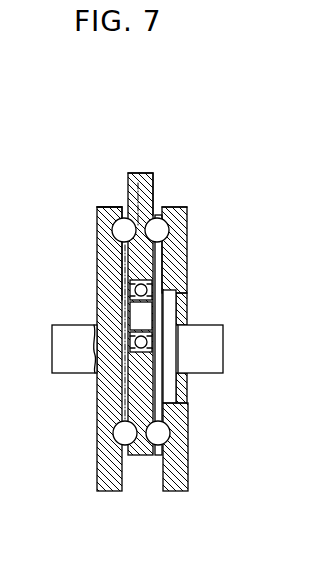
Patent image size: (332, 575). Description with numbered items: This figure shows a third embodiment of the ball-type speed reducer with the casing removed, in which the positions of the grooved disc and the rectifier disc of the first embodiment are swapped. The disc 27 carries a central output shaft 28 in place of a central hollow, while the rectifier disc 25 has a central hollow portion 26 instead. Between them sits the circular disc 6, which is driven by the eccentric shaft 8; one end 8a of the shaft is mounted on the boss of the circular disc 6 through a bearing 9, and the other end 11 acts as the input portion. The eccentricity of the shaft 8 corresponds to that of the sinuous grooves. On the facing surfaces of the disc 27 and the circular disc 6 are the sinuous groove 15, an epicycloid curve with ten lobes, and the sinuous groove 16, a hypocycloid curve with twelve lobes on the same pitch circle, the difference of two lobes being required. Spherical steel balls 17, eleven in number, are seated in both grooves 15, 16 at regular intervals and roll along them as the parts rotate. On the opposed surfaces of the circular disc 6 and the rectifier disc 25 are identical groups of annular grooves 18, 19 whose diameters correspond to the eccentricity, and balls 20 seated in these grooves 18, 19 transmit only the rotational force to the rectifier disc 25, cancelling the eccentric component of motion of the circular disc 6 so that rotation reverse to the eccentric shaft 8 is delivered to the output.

The circular disc 6 is at (140, 176).
The eccentric shaft 8 is at (196, 379).
The one end of eccentric shaft 8a is at (152, 316).
The bearing 9 is at (186, 268).
The other end of eccentric shaft 11 is at (213, 354).
The sinuous groove 15 is at (95, 258).
The sinuous groove 16 is at (120, 200).
The spherical balls 17 is at (107, 207).
The annular grooves 18 is at (156, 202).
The annular grooves 19 is at (189, 470).
The balls 20 is at (186, 223).
The rectifier disc 25 is at (184, 206).
The central hollow portion 26 is at (186, 297).
The disc 27 is at (98, 236).
The central output shaft 28 is at (62, 374).